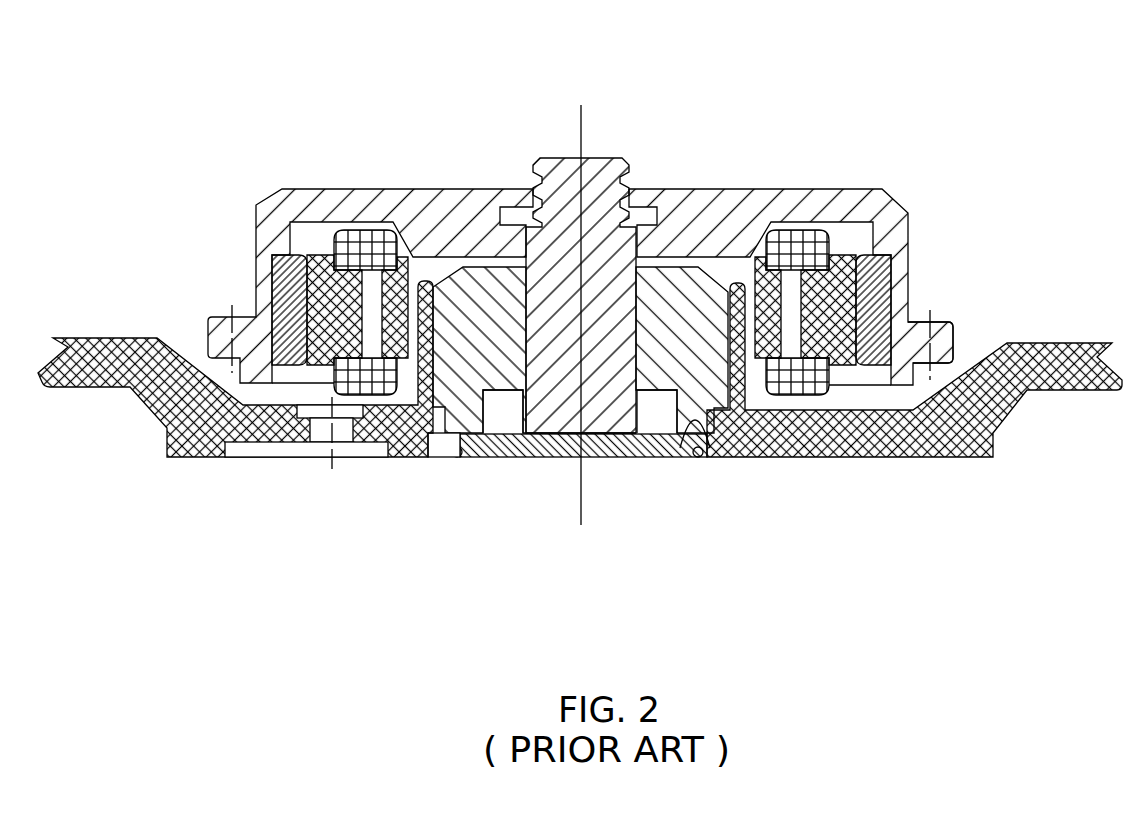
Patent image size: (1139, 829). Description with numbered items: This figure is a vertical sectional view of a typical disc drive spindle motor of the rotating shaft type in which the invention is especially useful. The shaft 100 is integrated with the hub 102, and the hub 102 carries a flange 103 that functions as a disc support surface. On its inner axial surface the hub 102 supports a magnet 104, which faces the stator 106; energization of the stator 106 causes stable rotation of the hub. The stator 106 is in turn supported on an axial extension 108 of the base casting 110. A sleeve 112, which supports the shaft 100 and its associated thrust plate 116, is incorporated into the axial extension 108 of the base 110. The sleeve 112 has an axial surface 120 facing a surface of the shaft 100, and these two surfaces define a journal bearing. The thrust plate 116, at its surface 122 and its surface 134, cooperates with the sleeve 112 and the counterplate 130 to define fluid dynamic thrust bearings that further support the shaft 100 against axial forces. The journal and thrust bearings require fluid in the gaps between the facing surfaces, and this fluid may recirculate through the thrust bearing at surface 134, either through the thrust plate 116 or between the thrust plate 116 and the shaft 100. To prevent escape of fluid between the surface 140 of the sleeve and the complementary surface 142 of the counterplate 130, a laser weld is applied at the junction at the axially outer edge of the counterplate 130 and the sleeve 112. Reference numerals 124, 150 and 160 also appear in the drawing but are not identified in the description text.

The shaft 100 is at (602, 157).
The hub 102 is at (897, 242).
The flange 103 is at (946, 332).
The magnet 104 is at (869, 358).
The stator 106 is at (755, 352).
The axial extension 108 is at (756, 342).
The base casting 110 is at (973, 465).
The sleeve 112 is at (412, 372).
The thrust plate 116 is at (507, 417).
The axial surface 120 is at (528, 285).
The thrust plate surface 122 is at (487, 377).
The counterplate 124 is at (482, 453).
The counterplate 130 is at (613, 420).
The thrust plate surface 134 is at (645, 407).
The sleeve surface 140 is at (700, 458).
The counterplate surface 142 is at (668, 435).
The mounting recess 150 is at (463, 550).
The sleeve hub 160 is at (438, 412).